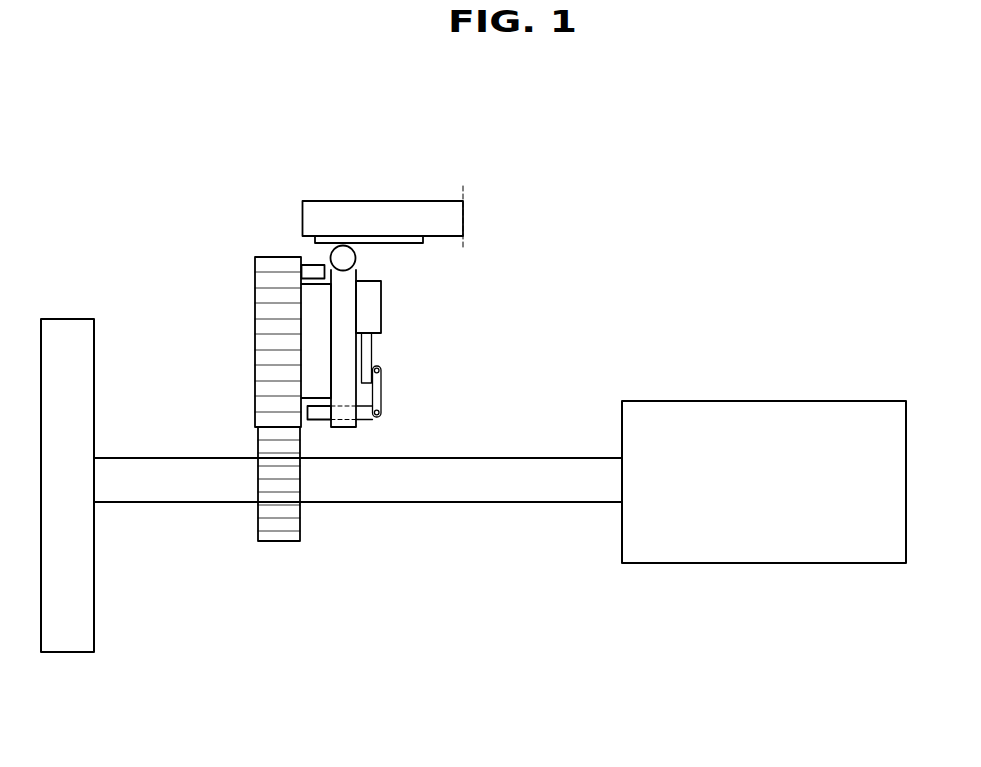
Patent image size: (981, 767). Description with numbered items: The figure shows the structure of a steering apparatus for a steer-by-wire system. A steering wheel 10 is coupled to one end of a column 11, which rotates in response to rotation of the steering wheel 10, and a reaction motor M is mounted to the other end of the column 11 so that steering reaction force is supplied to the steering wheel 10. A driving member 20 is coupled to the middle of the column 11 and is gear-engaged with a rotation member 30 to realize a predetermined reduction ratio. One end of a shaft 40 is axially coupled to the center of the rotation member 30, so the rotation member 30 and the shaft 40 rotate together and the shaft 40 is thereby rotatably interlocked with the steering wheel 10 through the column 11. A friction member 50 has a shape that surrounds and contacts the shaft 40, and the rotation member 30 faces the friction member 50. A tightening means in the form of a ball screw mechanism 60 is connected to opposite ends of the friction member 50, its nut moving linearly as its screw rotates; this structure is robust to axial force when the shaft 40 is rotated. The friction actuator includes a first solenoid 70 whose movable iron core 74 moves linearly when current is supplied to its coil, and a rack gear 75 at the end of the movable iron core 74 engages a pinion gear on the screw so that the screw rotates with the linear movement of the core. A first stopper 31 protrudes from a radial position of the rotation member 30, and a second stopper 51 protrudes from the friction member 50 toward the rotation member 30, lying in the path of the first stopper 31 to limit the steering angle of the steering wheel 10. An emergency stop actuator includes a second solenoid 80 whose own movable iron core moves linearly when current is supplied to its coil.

The steering wheel 10 is at (62, 332).
The column 11 is at (467, 490).
The reaction motor M is at (776, 563).
The driving member 20 is at (277, 530).
The rotation member 30 is at (268, 314).
The first stopper 31 is at (318, 268).
The shaft 40 is at (318, 372).
The friction member 50 is at (348, 359).
The second stopper 51 is at (318, 421).
The ball screw mechanism 60 is at (357, 259).
The first solenoid 70 is at (387, 176).
The movable iron core 74 is at (380, 212).
The rack gear 75 is at (322, 242).
The second solenoid 80 is at (383, 310).